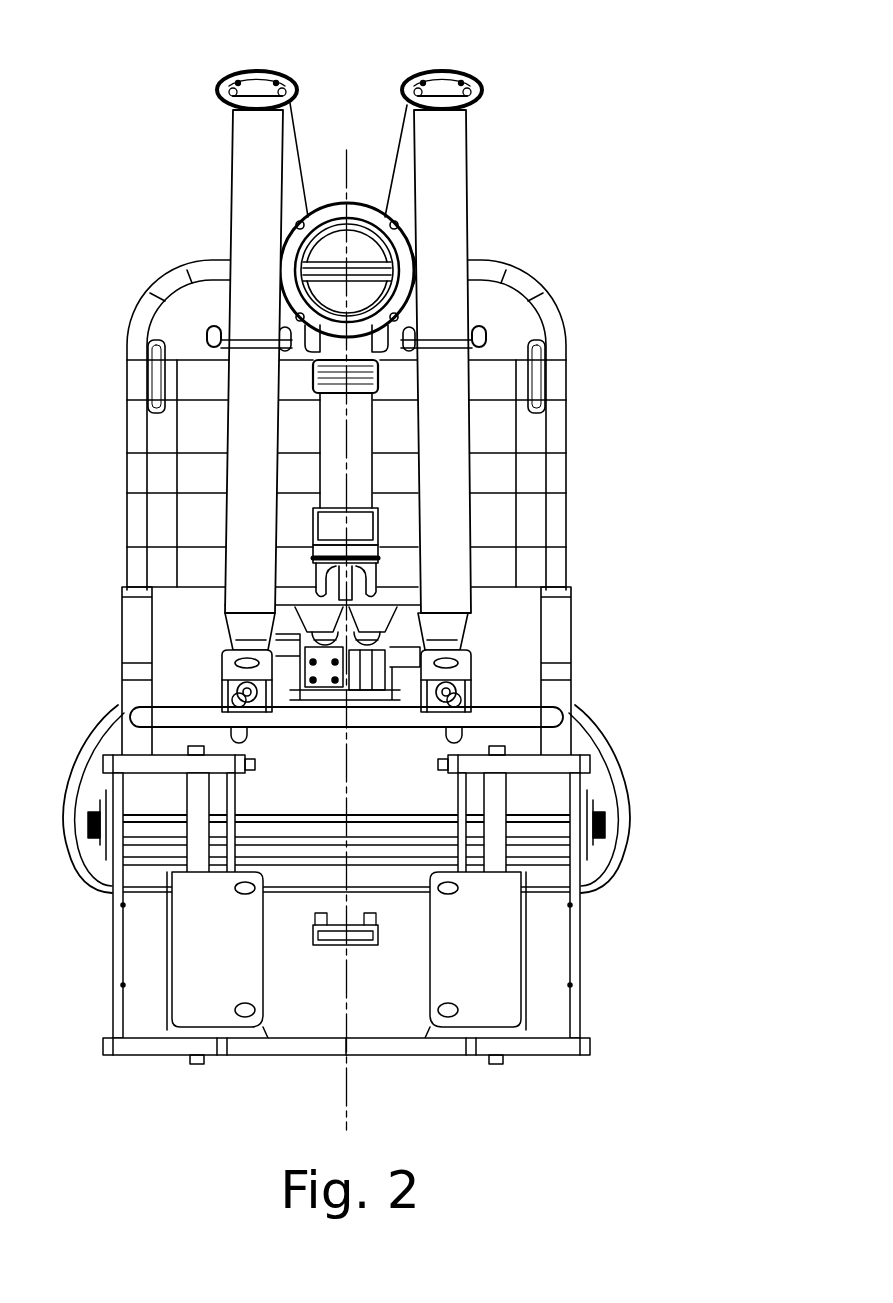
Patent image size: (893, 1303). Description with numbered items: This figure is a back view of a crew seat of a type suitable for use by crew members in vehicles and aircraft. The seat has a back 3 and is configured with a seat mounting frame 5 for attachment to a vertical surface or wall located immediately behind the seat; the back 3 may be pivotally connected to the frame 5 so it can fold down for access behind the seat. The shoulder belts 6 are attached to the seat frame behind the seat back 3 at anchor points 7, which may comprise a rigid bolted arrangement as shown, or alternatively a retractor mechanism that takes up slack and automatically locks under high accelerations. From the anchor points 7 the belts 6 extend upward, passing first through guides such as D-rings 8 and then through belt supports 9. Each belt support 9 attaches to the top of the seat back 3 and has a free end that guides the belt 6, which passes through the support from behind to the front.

The back 3 is at (582, 462).
The seat mounting frame 5 is at (620, 963).
The shoulder belts 6 is at (268, 150).
The anchor points 7 is at (235, 667).
The D-rings 8 is at (207, 336).
The belt supports 9 is at (220, 100).